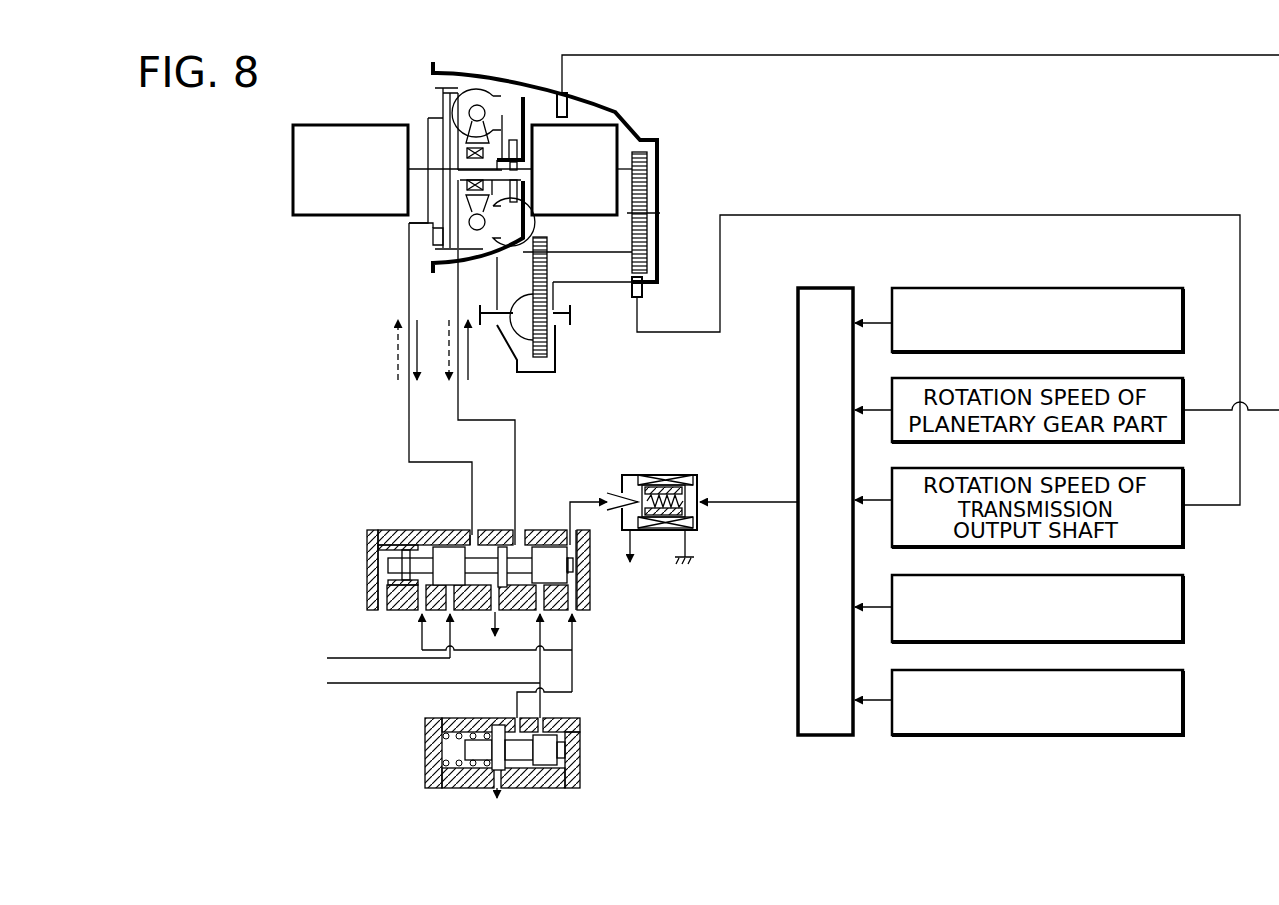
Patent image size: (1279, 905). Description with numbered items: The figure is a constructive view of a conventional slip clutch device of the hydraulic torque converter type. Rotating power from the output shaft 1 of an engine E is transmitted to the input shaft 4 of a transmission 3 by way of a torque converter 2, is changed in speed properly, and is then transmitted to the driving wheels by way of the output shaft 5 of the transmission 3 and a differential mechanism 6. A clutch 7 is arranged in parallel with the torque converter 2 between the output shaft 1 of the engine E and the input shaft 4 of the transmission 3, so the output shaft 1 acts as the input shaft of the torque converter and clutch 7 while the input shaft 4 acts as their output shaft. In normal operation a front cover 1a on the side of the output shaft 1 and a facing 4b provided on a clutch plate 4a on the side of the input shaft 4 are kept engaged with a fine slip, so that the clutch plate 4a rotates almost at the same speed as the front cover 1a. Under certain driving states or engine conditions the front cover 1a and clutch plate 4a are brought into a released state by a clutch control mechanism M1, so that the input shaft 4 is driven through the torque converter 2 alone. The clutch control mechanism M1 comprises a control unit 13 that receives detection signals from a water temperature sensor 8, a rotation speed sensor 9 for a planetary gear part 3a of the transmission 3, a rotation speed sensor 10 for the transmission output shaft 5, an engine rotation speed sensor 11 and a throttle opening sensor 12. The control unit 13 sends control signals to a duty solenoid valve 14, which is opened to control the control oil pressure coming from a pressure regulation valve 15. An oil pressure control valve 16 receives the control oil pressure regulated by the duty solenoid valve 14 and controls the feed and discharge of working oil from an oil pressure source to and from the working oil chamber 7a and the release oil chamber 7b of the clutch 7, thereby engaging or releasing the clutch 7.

The engine E is at (293, 170).
The output shaft 1 is at (418, 163).
The front cover 1a is at (435, 118).
The torque converter 2 is at (490, 92).
The transmission 3 is at (542, 122).
The planetary gear part 3a is at (618, 132).
The input shaft 4 is at (498, 157).
The clutch plate 4a is at (447, 110).
The facing 4b is at (438, 236).
The output shaft 5 is at (603, 252).
The differential mechanism 6 is at (555, 333).
The clutch 7 is at (437, 87).
The working oil chamber 7a is at (450, 240).
The release oil chamber 7b is at (433, 230).
The water temperature sensor 8 is at (1183, 703).
The rotation speed sensor 9 is at (567, 96).
The rotation speed sensor 10 is at (642, 290).
The engine rotation speed sensor 11 is at (1034, 288).
The throttle opening sensor 12 is at (1183, 605).
The control unit 13 is at (826, 288).
The duty solenoid valve 14 is at (666, 473).
The pressure regulation valve 15 is at (567, 748).
The oil pressure control valve 16 is at (378, 560).
The clutch control mechanism M1 is at (582, 572).